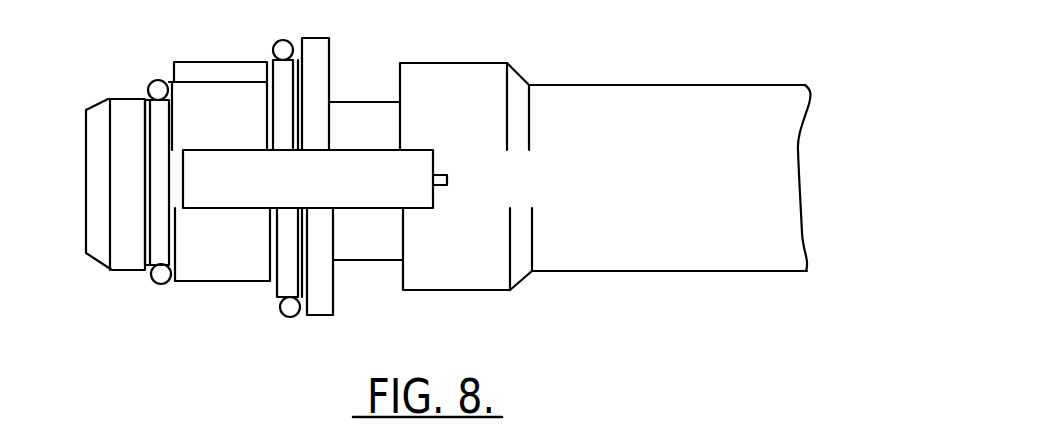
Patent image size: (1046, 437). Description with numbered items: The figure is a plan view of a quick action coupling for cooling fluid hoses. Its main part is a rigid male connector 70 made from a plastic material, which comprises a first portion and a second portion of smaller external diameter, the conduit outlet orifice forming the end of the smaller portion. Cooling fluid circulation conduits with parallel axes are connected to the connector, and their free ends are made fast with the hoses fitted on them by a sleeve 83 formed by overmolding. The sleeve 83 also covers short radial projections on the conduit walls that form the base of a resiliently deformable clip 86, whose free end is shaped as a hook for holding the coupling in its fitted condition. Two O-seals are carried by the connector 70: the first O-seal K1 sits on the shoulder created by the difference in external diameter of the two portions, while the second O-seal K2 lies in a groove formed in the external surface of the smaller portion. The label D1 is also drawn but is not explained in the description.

The rigid male connector 70 is at (235, 292).
The sleeve 83 is at (475, 268).
The resiliently deformable clip 86 is at (378, 180).
The O-seal K1 is at (291, 315).
The O-seal K2 is at (162, 284).
The rod D1 is at (680, 85).